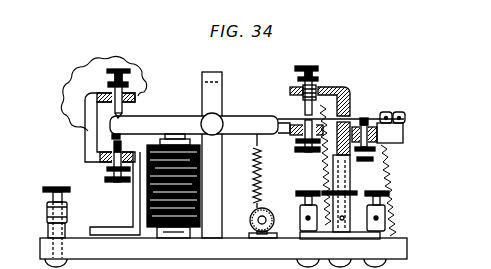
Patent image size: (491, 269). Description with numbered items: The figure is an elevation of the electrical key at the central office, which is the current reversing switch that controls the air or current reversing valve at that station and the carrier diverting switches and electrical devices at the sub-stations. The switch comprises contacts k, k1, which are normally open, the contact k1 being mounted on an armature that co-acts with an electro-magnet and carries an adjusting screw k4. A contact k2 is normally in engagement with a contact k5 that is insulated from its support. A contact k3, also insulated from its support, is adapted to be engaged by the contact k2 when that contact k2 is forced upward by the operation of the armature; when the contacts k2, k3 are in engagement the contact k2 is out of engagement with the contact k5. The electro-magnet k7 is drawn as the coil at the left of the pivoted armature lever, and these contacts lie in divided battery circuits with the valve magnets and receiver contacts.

The contact k is at (64, 145).
The contact k1 is at (168, 84).
The contact k2 is at (361, 118).
The contact k3 is at (287, 90).
The adjusting screw k4 is at (296, 137).
The contact k5 is at (380, 122).
The electromagnet coil k7 is at (147, 198).